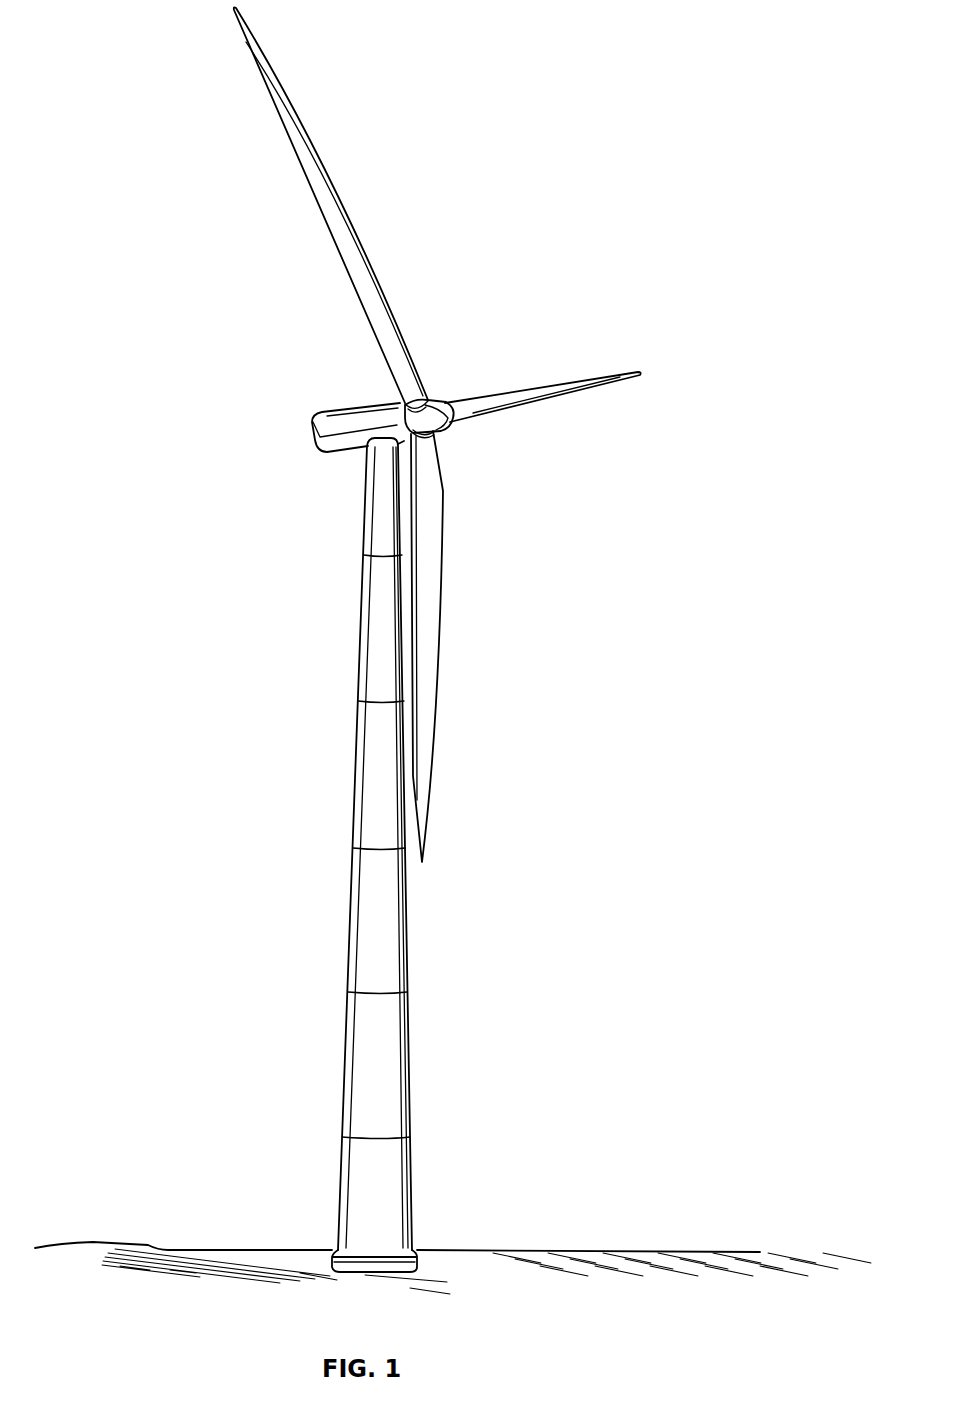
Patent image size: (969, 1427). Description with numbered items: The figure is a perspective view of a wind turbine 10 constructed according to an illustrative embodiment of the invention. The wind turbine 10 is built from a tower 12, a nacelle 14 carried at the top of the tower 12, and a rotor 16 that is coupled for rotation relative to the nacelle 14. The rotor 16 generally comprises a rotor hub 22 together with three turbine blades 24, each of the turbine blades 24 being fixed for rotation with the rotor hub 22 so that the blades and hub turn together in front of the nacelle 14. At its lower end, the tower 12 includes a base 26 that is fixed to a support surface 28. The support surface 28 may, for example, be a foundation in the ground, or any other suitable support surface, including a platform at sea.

The wind turbine 10 is at (353, 602).
The tower 12 is at (352, 875).
The nacelle 14 is at (312, 423).
The rotor 16 is at (454, 430).
The rotor hub 22 is at (435, 407).
The turbine blades 24 is at (343, 213).
The base 26 is at (358, 1275).
The support surface 28 is at (456, 1248).